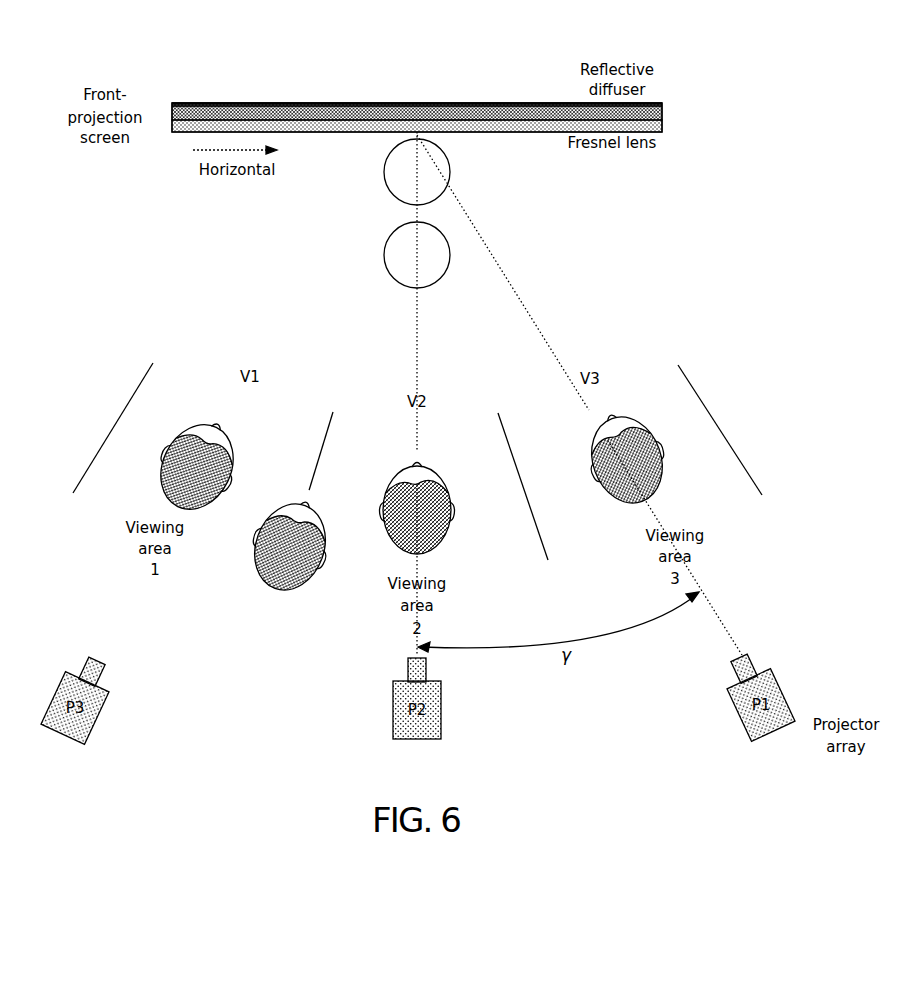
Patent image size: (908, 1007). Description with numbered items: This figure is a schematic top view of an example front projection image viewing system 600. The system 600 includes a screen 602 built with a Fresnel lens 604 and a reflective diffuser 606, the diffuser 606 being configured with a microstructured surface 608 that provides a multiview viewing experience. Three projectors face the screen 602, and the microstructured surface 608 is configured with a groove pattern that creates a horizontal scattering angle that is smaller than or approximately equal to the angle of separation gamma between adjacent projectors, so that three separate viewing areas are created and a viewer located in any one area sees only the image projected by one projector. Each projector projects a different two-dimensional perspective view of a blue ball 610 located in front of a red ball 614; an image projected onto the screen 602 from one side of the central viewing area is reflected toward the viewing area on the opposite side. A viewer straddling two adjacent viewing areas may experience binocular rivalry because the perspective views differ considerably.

The front projection image viewing system 600 is at (464, 94).
The screen 602 is at (454, 98).
The Fresnel lens 604 is at (663, 128).
The reflective diffuser 606 is at (663, 110).
The microstructured surface 608 is at (377, 103).
The blue ball 610 is at (385, 255).
The red viewing zone 614 is at (450, 168).